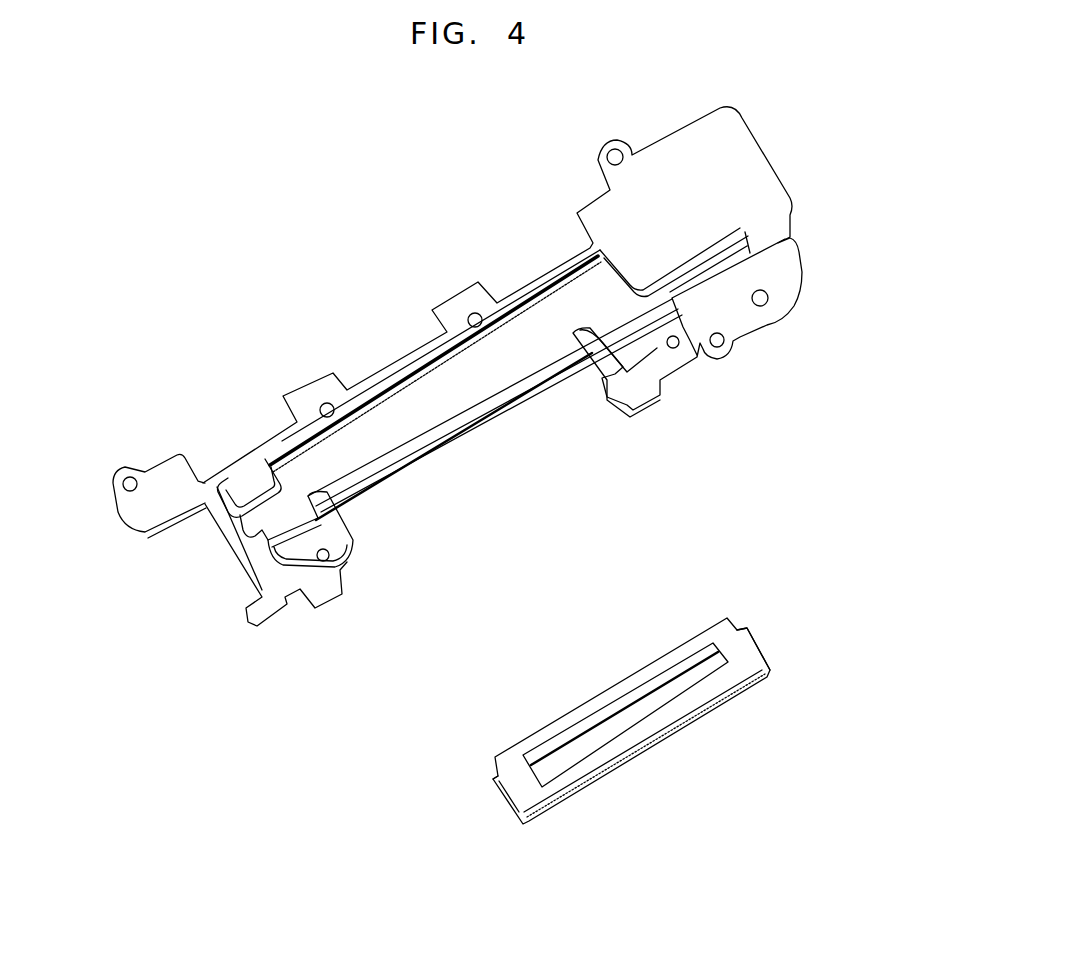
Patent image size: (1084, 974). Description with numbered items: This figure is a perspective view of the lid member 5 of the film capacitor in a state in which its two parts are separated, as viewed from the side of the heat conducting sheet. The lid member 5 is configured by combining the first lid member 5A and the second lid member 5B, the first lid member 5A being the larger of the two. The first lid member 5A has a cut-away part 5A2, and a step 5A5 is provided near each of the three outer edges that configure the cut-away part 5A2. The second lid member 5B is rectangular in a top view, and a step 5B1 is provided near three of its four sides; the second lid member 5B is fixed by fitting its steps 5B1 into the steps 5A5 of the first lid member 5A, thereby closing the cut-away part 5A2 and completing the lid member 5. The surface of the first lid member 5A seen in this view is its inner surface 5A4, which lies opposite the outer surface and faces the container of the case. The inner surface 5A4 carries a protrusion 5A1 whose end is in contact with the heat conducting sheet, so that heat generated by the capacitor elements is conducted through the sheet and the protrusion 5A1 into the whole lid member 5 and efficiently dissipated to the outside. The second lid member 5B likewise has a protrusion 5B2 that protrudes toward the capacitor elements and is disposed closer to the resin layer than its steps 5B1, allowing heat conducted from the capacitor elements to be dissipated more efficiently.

The lid member 5 is at (202, 178).
The first lid member 5A is at (738, 312).
The protrusion 5A1 is at (550, 318).
The cut-away part 5A2 is at (487, 456).
The inner surface 5A4 is at (168, 480).
The step 5A5 is at (605, 376).
The second lid member 5B is at (598, 764).
The step 5B1 is at (757, 651).
The protrusion 5B2 is at (685, 679).